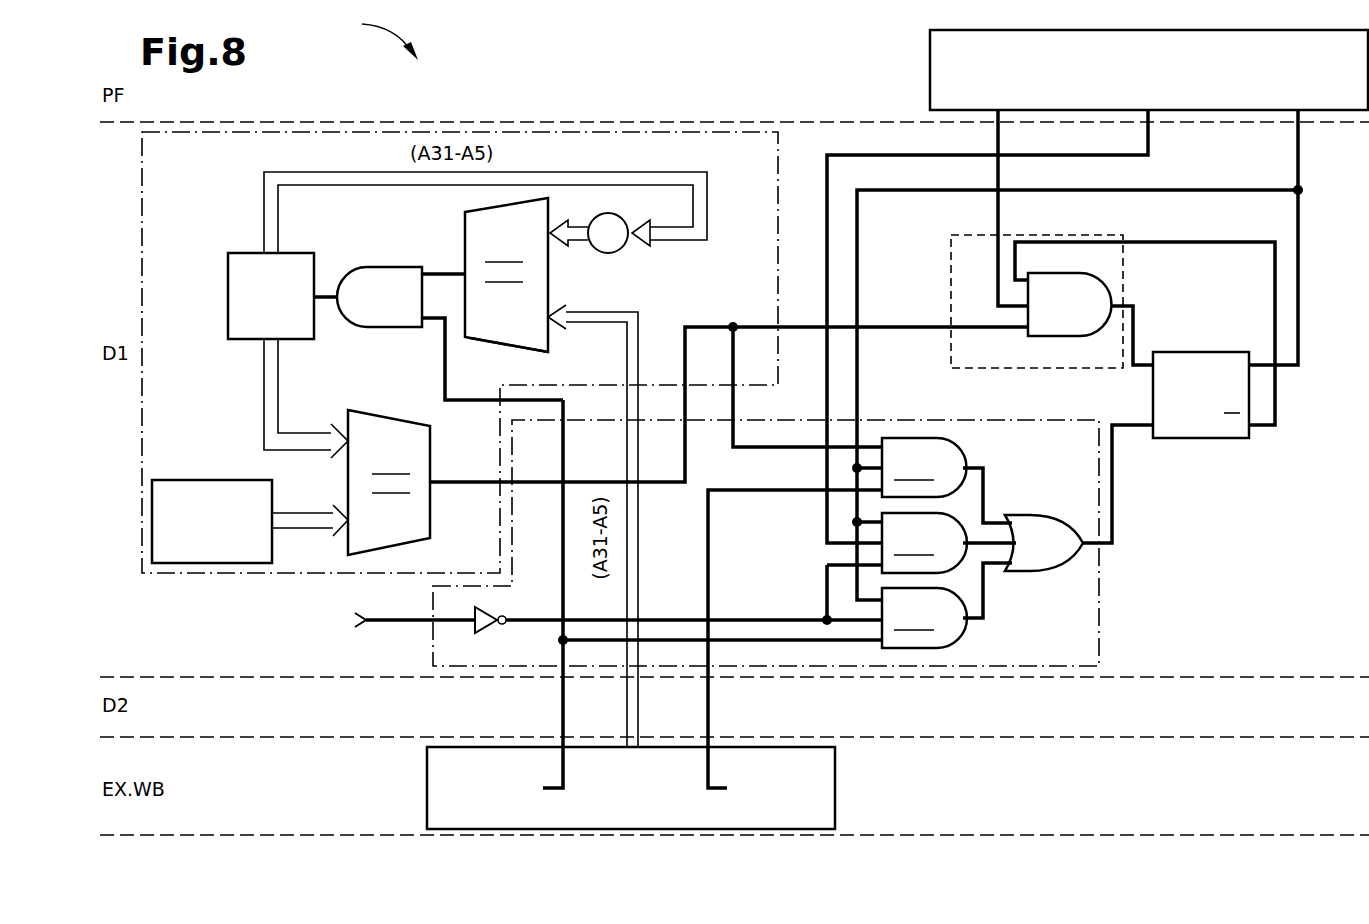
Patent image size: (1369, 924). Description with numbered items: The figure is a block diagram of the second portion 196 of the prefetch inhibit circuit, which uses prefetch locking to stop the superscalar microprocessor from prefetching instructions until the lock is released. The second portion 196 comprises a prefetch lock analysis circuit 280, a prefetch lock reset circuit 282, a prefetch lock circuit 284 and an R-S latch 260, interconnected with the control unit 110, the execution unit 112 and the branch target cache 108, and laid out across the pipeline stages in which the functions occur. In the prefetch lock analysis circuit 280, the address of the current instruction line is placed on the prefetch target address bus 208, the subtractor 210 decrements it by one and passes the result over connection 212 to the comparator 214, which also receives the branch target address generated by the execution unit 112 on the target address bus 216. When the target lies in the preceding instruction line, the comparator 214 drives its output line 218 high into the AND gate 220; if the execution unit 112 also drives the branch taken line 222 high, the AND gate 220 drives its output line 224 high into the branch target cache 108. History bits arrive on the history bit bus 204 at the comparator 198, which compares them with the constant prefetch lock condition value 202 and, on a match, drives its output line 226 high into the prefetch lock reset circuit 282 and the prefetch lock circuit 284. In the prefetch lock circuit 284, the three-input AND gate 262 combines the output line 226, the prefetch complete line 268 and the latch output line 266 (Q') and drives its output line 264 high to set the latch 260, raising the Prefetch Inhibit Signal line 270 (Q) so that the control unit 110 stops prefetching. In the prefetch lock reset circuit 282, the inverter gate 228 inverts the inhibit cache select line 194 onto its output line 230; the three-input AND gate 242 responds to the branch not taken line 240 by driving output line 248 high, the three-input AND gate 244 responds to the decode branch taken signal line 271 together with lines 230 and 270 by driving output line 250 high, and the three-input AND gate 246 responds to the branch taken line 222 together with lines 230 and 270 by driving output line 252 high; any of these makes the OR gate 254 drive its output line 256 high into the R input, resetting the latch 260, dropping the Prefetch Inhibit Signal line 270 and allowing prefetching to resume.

The second portion 196 is at (369, 36).
The control unit 110 is at (942, 32).
The prefetch lock analysis circuit 280 is at (142, 178).
The prefetch lock reset circuit 282 is at (1099, 625).
The prefetch lock circuit 284 is at (1123, 235).
The branch target cache 108 is at (228, 307).
The prefetch target address bus 208 is at (630, 172).
The subtractor 210 is at (633, 248).
The decremented address input 212 is at (577, 246).
The output line 218 is at (437, 272).
The comparator 214 is at (483, 340).
The target address bus 216 is at (642, 331).
The AND gate 220 is at (372, 266).
The output line 224 is at (328, 300).
The branch taken line 222 is at (445, 360).
The history bit bus 204 is at (263, 372).
The comparator 198 is at (430, 462).
The prefetch lock condition value 202 is at (230, 480).
The output line 226 is at (473, 484).
The inhibit cache select line 194 is at (400, 622).
The inverter gate 228 is at (490, 628).
The output line 230 is at (700, 616).
The branch not taken line 240 is at (710, 716).
The execution unit 112 is at (835, 815).
The decode branch taken signal line 271 is at (907, 155).
The prefetch complete line 268 is at (1000, 172).
The Prefetch Inhibit Signal line 270 is at (1298, 263).
The three-input AND gate 262 is at (1040, 336).
The output line 264 is at (1133, 305).
The output line (Q') 266 is at (1040, 242).
The R-S latch 260 is at (1197, 438).
The three-input AND gate 242 is at (924, 467).
The three-input AND gate 244 is at (924, 543).
The three-input AND gate 246 is at (924, 618).
The output line 248 is at (980, 478).
The output line 250 is at (987, 530).
The output line 252 is at (987, 588).
The OR gate 254 is at (1078, 558).
The output line 256 is at (1112, 523).